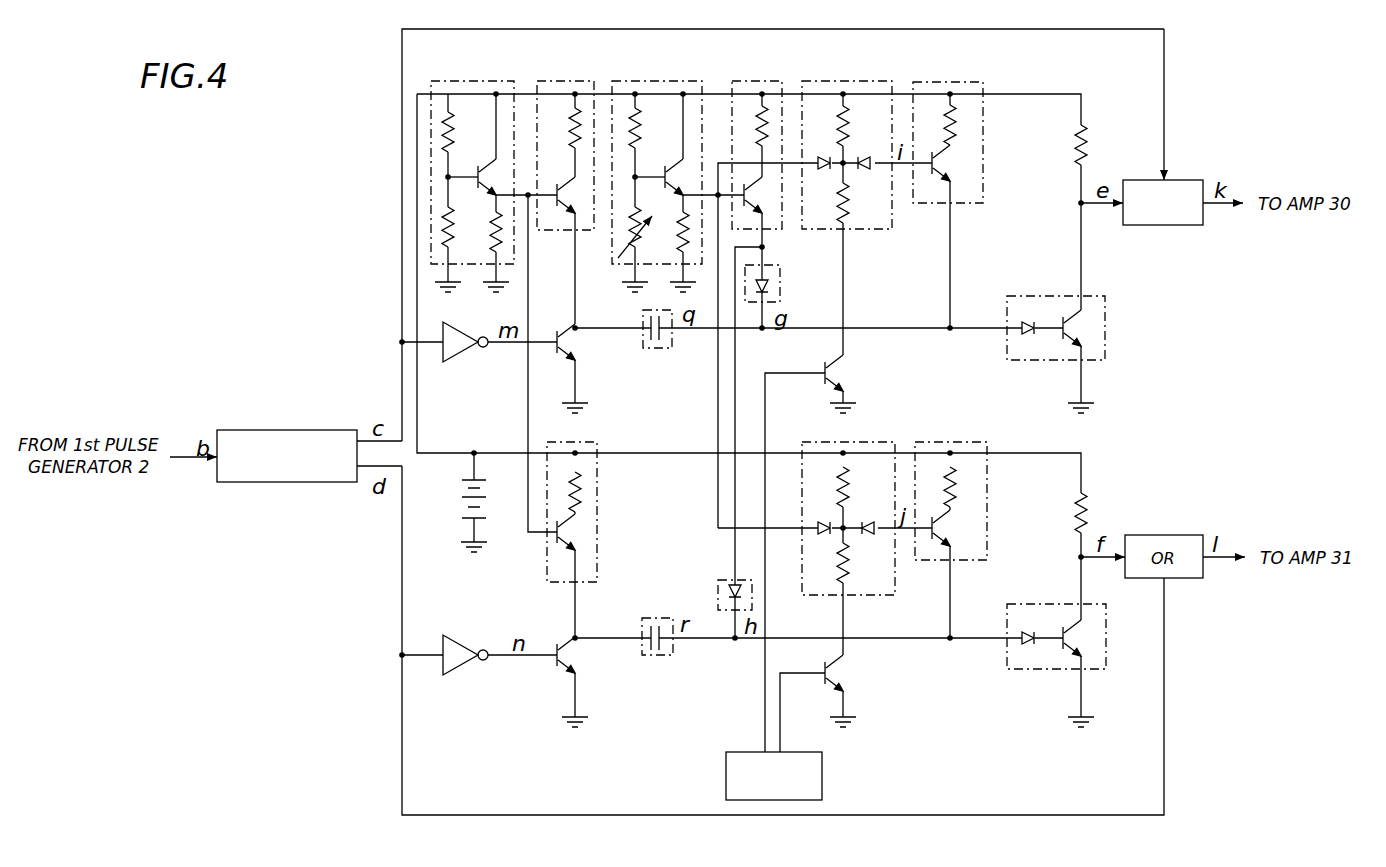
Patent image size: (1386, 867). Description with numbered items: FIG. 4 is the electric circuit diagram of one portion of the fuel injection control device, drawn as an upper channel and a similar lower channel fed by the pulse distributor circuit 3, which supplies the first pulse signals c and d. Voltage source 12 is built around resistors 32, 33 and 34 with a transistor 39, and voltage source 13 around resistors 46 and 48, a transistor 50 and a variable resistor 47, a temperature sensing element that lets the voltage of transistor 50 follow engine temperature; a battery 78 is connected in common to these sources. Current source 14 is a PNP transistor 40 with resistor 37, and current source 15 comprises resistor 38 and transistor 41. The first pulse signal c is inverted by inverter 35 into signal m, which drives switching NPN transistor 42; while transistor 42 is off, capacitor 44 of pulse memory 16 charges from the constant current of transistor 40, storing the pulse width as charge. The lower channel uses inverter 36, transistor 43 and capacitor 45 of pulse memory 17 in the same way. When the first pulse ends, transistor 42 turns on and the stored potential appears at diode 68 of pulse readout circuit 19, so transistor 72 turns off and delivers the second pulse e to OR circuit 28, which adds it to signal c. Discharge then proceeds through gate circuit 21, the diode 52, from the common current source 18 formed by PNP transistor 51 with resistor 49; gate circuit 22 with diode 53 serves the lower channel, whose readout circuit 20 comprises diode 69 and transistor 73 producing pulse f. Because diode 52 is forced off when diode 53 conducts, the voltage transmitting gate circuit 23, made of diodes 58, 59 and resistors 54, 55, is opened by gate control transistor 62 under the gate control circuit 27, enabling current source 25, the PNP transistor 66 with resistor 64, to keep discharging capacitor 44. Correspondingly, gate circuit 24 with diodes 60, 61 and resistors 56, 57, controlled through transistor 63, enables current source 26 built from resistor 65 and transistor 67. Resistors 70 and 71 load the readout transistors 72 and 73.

The pulse distributor circuit 3 is at (292, 412).
The voltage source 12 is at (482, 80).
The voltage source 13 is at (688, 80).
The current source 14 is at (578, 80).
The current source 15 is at (546, 578).
The pulse memory 16 is at (648, 352).
The pulse memory 17 is at (666, 616).
The current source 18 is at (766, 80).
The pulse readout circuit 19 is at (1052, 294).
The pulse readout circuit 20 is at (1050, 604).
The gate circuit 21 is at (784, 282).
The gate circuit 22 is at (722, 580).
The voltage transmitting gate circuit 23 is at (872, 80).
The voltage transmitting gate circuit 24 is at (856, 440).
The current source 25 is at (970, 80).
The current source 26 is at (941, 440).
The gate control circuit 27 is at (822, 772).
The OR circuit 28 is at (1147, 226).
The resistor 32 is at (442, 136).
The resistor 33 is at (442, 228).
The resistor 34 is at (504, 225).
The inverter 35 is at (446, 362).
The inverter 36 is at (452, 652).
The resistor 37 is at (562, 137).
The resistor 38 is at (584, 496).
The transistor 39 is at (474, 174).
The PNP transistor 40 is at (566, 218).
The transistor 41 is at (572, 540).
The switching NPN transistor 42 is at (566, 342).
The switching NPN transistor 43 is at (564, 656).
The capacitor 44 is at (672, 342).
The capacitor 45 is at (650, 658).
The resistor 46 is at (653, 137).
The variable resistor 47 is at (622, 252).
The resistor 48 is at (688, 236).
The resistor 49 is at (758, 142).
The transistor 50 is at (678, 166).
The PNP transistor 51 is at (762, 222).
The diode 52 is at (770, 288).
The diode 53 is at (724, 594).
The resistor 54 is at (828, 130).
The resistor 55 is at (848, 196).
The resistor 56 is at (848, 488).
The resistor 57 is at (827, 555).
The diode 58 is at (826, 168).
The diode 59 is at (858, 160).
The diode 60 is at (824, 520).
The diode 61 is at (872, 538).
The gate control transistor 62 is at (844, 374).
The transistor 63 is at (848, 676).
The resistor 64 is at (936, 121).
The resistor 65 is at (958, 496).
The PNP transistor 66 is at (944, 166).
The constant current source transistor 67 is at (944, 538).
The diode 68 is at (1028, 334).
The diode 69 is at (1028, 648).
The resistor 70 is at (1074, 150).
The resistor 71 is at (1076, 522).
The transistor 72 is at (1082, 330).
The transistor 73 is at (1082, 638).
The battery 78 is at (456, 502).